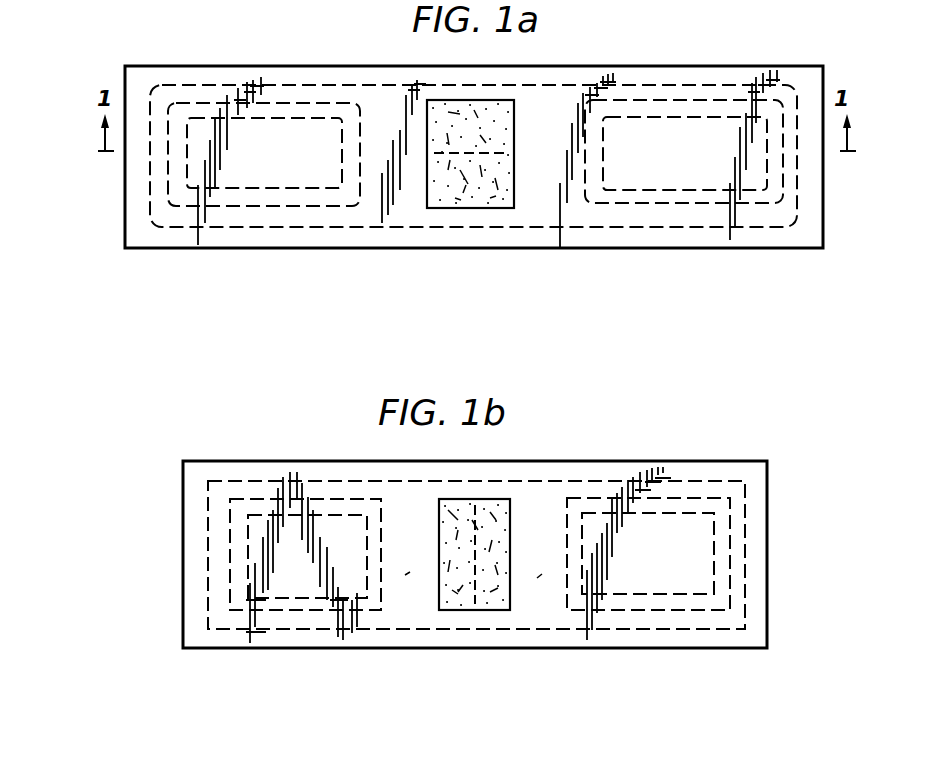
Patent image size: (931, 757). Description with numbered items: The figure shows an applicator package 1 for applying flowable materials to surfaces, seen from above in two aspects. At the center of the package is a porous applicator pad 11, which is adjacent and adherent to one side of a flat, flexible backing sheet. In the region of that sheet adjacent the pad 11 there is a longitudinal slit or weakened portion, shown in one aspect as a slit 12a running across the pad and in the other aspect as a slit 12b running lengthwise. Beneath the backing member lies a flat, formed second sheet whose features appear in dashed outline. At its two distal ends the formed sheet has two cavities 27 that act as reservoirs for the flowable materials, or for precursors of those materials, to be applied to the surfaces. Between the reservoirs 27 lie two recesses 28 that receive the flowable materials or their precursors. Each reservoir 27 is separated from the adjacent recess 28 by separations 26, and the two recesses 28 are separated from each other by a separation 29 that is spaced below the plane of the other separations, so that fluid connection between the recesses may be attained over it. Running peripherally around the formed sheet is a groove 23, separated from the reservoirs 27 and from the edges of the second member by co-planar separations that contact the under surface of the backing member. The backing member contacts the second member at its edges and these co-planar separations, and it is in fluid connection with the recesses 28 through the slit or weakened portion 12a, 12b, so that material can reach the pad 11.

In FIG. 1a, the applicator package 1 is at (634, 60).
In FIG. 1b, the applicator package 1 is at (233, 453).
In FIG. 1a, the porous applicator pad 11 is at (500, 115).
In FIG. 1b, the porous applicator pad 11 is at (498, 607).
In FIG. 1a, the longitudinal slit or weakened portion 12a is at (504, 160).
In FIG. 1b, the longitudinal slit or weakened portion 12b is at (473, 527).
In FIG. 1b, the groove 23 is at (277, 618).
In FIG. 1a, the separations 26 is at (358, 125).
In FIG. 1b, the separations 26 is at (567, 518).
In FIG. 1a, the cavities 27 is at (265, 175).
In FIG. 1b, the cavities 27 is at (357, 615).
In FIG. 1a, the recesses 28 is at (413, 92).
In FIG. 1b, the recesses 28 is at (410, 575).
In FIG. 1a, the separation 29 is at (467, 195).
In FIG. 1b, the separation 29 is at (463, 585).